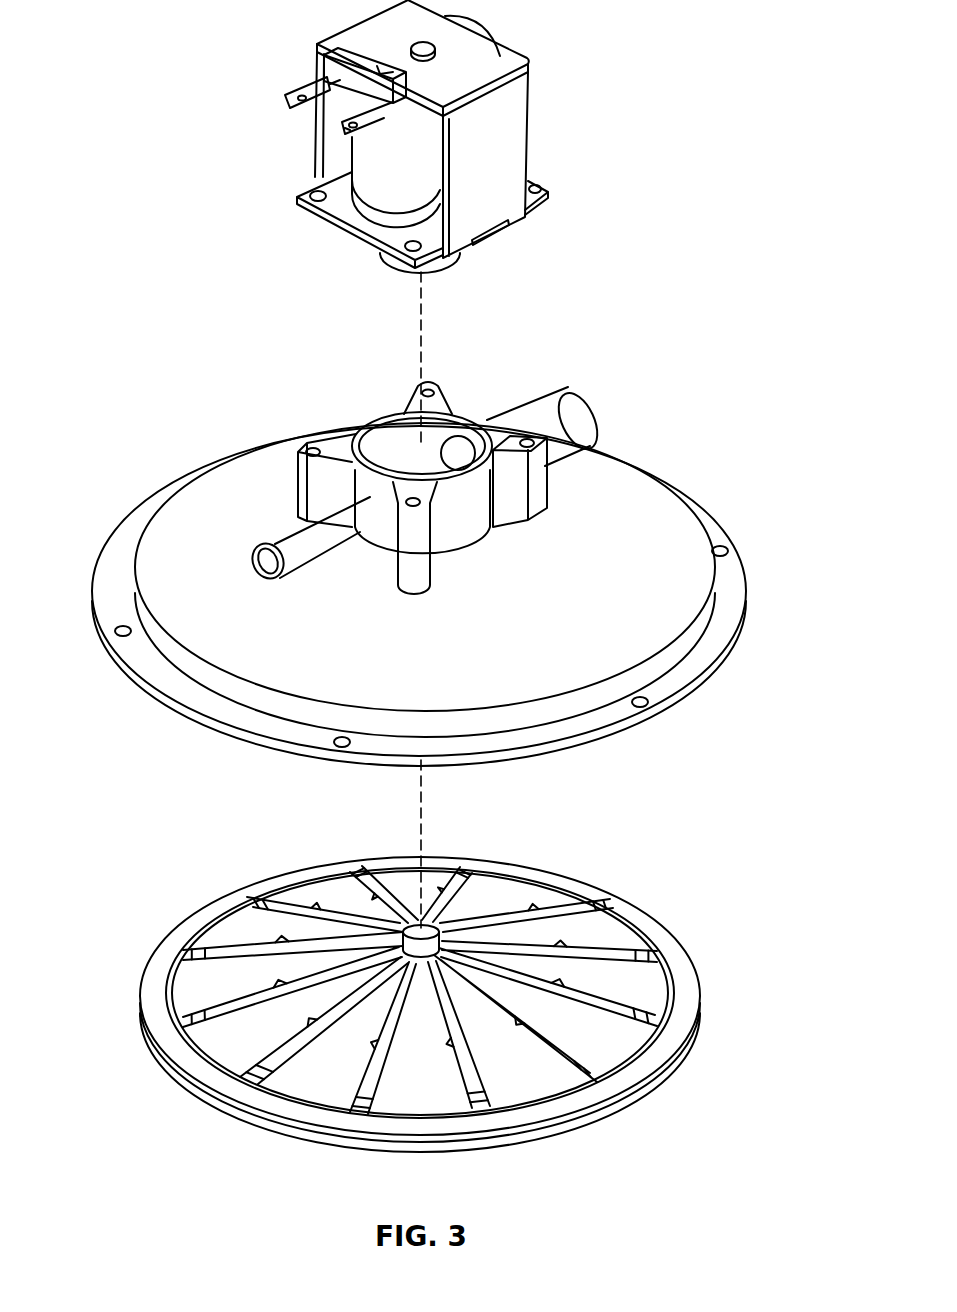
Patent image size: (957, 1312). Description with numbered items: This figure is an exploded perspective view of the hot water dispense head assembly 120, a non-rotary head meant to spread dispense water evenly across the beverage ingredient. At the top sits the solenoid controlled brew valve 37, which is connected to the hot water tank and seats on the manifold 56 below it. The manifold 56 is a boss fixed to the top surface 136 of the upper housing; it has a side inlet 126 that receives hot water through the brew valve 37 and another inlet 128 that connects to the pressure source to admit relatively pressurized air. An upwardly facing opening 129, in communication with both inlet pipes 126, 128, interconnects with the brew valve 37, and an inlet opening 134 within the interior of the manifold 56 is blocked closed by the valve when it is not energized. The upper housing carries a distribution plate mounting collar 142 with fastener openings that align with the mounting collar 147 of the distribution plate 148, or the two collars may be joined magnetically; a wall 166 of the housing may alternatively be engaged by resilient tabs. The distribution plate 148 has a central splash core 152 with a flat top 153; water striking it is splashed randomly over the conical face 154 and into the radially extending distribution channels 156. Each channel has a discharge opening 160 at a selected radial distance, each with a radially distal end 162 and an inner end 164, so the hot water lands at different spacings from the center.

The brew valve 37 is at (530, 100).
The manifold 56 is at (462, 539).
The dispense head assembly 120 is at (220, 447).
The side inlet 126 is at (520, 402).
The inlet 128 is at (290, 533).
The upwardly facing opening 129 is at (392, 437).
The inlet opening 134 is at (453, 443).
The top surface 136 is at (673, 538).
The distribution plate mounting collar 142 is at (108, 584).
The mounting collar 147 is at (167, 957).
The distribution plate 148 is at (700, 970).
The central splash core 152 is at (312, 1020).
The flat top 153 is at (457, 900).
The conical face 154 is at (178, 1010).
The radially extending distribution channels 156 is at (250, 1000).
The discharge opening 160 is at (275, 1077).
The radially distal end 162 is at (282, 910).
The inner ends 164 is at (285, 907).
The wall 166 is at (678, 645).